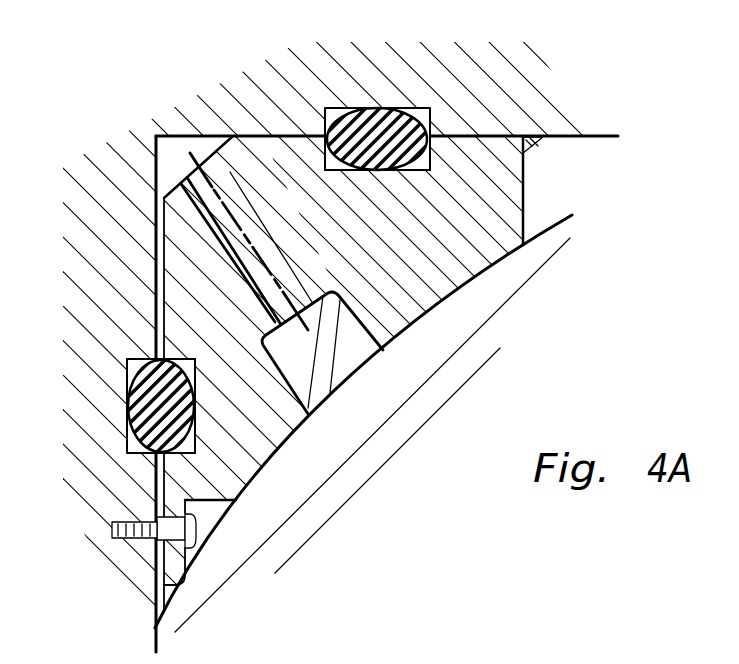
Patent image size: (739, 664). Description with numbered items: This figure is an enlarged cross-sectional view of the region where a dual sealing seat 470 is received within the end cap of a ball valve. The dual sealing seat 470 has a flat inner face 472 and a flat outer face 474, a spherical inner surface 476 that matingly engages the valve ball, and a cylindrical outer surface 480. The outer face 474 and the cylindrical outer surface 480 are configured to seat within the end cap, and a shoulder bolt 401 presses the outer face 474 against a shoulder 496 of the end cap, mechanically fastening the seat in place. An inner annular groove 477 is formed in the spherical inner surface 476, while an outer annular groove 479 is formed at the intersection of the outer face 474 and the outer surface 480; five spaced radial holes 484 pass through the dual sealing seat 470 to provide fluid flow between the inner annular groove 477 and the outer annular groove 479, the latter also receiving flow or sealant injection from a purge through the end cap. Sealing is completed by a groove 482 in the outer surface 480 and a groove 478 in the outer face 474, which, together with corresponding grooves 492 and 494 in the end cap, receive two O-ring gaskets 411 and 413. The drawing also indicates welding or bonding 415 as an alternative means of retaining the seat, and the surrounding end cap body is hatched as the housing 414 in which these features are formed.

The shoulder bolt 401 is at (112, 528).
The O-ring gasket 411 is at (147, 409).
The O-ring gasket 413 is at (378, 116).
The housing 414 is at (92, 153).
The welding or bonding 415 is at (537, 145).
The dual sealing seat 470 is at (290, 143).
The inner face 472 is at (523, 205).
The outer face 474 is at (162, 482).
The spherical inner surface 476 is at (268, 462).
The inner annular groove 477 is at (347, 353).
The groove 478 is at (194, 438).
The outer annular groove 479 is at (208, 178).
The cylindrical outer surface 480 is at (481, 137).
The groove 482 is at (403, 171).
The radial holes 484 is at (235, 222).
The groove 492 is at (330, 104).
The groove 494 is at (128, 365).
The shoulder 496 is at (166, 470).